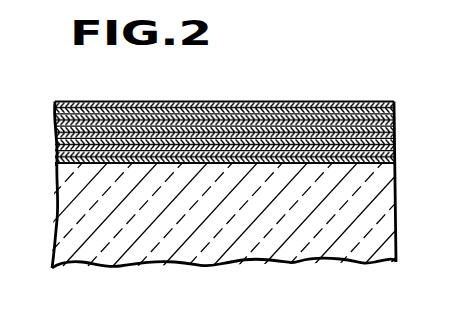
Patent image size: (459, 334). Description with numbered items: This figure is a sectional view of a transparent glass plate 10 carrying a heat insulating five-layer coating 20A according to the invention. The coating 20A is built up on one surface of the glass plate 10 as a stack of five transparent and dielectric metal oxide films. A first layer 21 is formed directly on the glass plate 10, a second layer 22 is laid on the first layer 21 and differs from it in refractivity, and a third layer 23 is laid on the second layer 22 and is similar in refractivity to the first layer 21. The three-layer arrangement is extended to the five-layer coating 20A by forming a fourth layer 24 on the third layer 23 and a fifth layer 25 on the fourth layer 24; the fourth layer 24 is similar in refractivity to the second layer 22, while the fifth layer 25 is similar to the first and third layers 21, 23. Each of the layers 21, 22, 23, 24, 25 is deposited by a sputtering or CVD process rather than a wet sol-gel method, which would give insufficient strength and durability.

The transparent glass plate 10 is at (309, 243).
The five-layer coating 20A is at (223, 146).
The first layer 21 is at (396, 160).
The second layer 22 is at (396, 149).
The third layer 23 is at (396, 132).
The fourth layer 24 is at (396, 119).
The fifth layer 25 is at (397, 102).